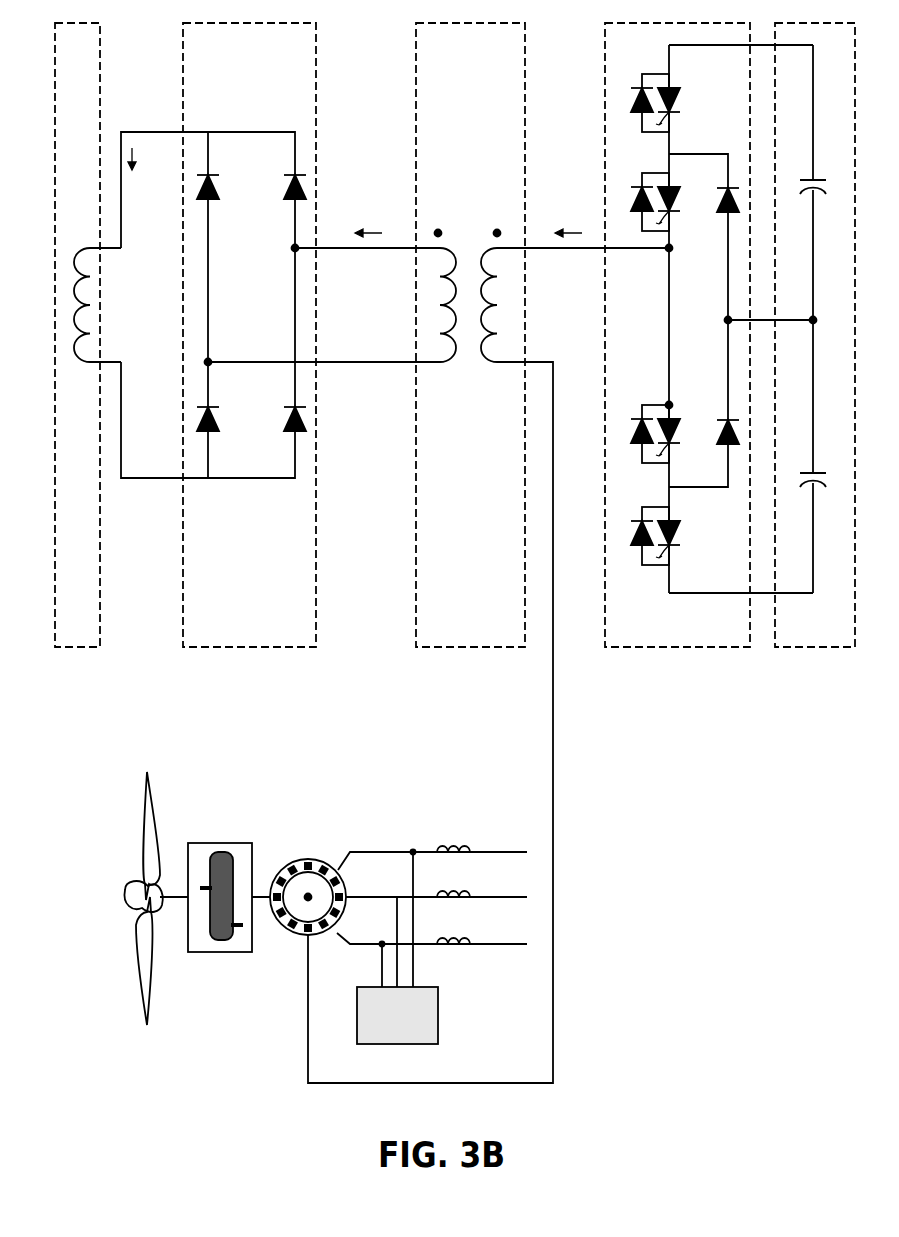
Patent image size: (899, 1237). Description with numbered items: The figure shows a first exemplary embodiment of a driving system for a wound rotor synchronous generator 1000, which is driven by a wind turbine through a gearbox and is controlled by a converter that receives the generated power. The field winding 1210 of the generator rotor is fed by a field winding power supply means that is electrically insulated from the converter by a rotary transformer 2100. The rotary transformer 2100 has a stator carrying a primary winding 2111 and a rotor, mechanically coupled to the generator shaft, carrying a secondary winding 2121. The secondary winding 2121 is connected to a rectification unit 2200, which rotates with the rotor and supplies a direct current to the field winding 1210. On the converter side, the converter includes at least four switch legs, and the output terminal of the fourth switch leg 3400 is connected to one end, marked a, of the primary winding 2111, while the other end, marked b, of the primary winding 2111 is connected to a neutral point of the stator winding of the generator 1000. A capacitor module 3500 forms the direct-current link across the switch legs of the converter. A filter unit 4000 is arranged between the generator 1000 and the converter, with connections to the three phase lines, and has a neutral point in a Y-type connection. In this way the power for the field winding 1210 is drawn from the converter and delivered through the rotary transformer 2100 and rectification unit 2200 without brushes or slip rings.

The field winding 1210 is at (82, 648).
The rectification unit 2200 is at (240, 648).
The rotary transformer 2100 is at (488, 553).
The primary winding 2111 is at (500, 215).
The secondary winding 2121 is at (435, 380).
The fourth switch leg 3400 is at (693, 648).
The capacitor module 3500 is at (822, 648).
The wound rotor synchronous generator 1000 is at (300, 860).
The filter unit 4000 is at (397, 1015).